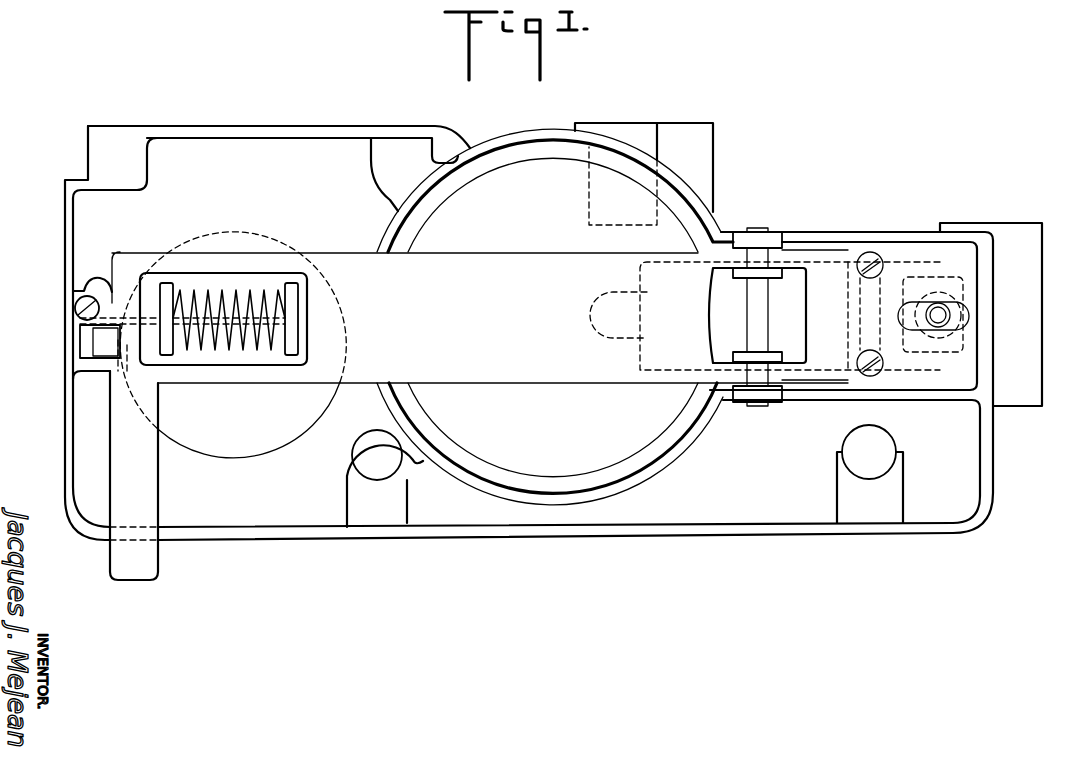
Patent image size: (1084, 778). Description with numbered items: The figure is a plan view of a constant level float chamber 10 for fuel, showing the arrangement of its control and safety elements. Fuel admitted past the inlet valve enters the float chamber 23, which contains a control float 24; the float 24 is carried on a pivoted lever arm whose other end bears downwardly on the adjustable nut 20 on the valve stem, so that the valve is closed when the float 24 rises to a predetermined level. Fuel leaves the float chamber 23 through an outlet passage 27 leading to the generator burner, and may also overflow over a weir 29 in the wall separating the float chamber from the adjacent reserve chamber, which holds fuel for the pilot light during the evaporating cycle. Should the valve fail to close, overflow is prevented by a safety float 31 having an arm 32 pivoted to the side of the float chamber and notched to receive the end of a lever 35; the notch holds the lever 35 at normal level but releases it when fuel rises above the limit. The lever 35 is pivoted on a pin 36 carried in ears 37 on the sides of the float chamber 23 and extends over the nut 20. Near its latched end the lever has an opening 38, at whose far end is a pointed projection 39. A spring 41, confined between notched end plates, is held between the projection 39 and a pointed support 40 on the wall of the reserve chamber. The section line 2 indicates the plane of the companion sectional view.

The section line 2- 2 is at (52, 340).
The float chamber 10 is at (260, 105).
The adjustable nut 20 is at (257, 495).
The float chamber 23 is at (505, 475).
The control float 24 is at (593, 448).
The outlet passage 27 is at (365, 455).
The weir 29 is at (443, 467).
The safety float 31 is at (227, 440).
The arm 32 is at (180, 355).
The lever 35 is at (483, 258).
The pin 36 is at (757, 376).
The ears 37 is at (742, 233).
The opening 38 is at (253, 280).
The pointed projection 39 is at (307, 320).
The pointed support 40 is at (150, 320).
The spring 41 is at (212, 292).